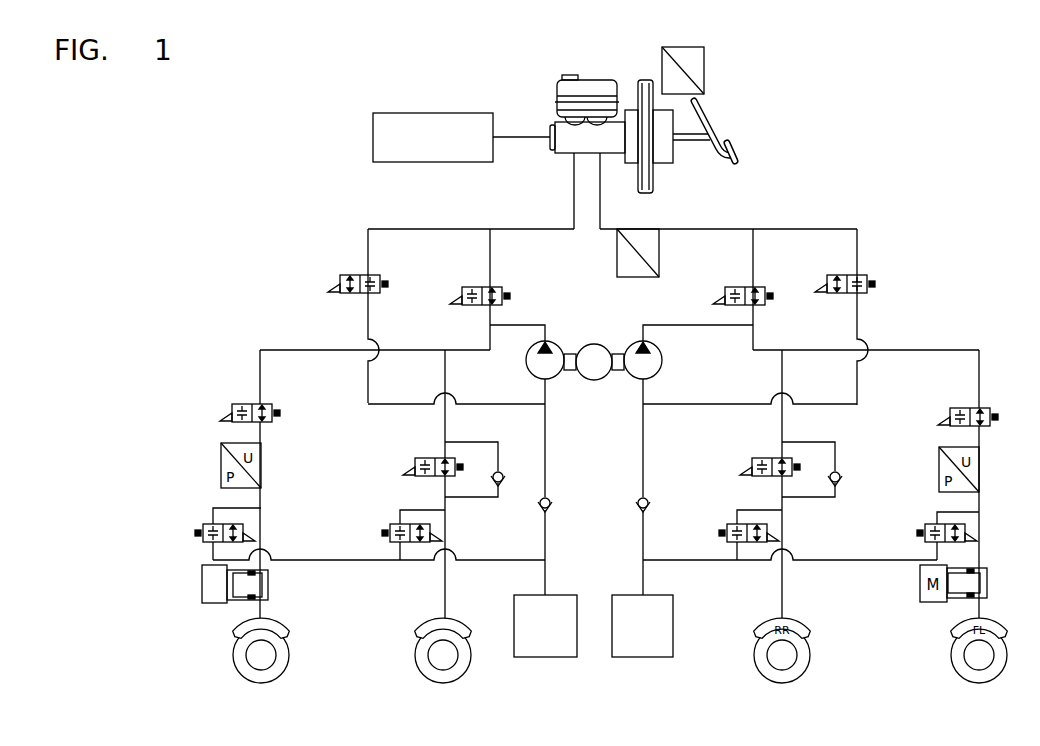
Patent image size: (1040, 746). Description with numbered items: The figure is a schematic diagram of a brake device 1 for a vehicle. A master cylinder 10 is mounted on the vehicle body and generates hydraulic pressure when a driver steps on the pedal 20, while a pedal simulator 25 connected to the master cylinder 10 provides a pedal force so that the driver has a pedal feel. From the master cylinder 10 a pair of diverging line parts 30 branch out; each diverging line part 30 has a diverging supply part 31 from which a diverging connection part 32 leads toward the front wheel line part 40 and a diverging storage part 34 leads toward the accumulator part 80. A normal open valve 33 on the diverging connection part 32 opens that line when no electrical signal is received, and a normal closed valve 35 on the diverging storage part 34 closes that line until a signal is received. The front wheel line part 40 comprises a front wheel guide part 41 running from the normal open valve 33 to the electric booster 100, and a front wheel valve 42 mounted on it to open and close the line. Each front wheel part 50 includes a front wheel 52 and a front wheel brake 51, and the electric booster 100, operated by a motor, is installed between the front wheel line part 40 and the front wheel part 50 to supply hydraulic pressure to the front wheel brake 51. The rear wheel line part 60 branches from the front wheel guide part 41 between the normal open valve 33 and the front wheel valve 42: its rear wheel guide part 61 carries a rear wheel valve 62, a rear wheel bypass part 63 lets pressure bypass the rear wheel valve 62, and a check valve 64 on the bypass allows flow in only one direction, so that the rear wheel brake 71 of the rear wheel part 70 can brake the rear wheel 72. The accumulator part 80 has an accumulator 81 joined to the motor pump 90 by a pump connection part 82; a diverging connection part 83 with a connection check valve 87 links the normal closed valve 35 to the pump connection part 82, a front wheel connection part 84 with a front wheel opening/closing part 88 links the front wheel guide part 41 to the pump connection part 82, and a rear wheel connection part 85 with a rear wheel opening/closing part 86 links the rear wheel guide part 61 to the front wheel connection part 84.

The brake device 1 is at (1000, 55).
The master cylinder 10 is at (594, 79).
The pedal 20 is at (713, 132).
The pedal simulator 25 is at (432, 113).
The diverging line part 30 is at (223, 165).
The diverging supply part 31 is at (538, 229).
The diverging connection part 32 is at (490, 230).
The normal open valve 33 is at (462, 300).
The diverging storage part 34 is at (368, 252).
The normal closed valve 35 is at (340, 281).
The front wheel line part 40 is at (165, 375).
The front wheel guide part 41 is at (260, 382).
The front wheel valve 42 is at (221, 412).
The front wheel part 50 is at (272, 645).
The front wheel brake 51 is at (297, 651).
The front wheel 52 is at (235, 653).
The rear wheel line part 60 is at (952, 245).
The rear wheel guide part 61 is at (785, 367).
The rear wheel valve 62 is at (799, 462).
The rear wheel bypass part 63 is at (837, 452).
The check valve 64 is at (840, 475).
The rear wheel part 70 is at (453, 646).
The rear wheel brake 71 is at (455, 618).
The rear wheel 72 is at (417, 653).
The accumulator part 80 is at (557, 593).
The accumulator 81 is at (673, 617).
The pump connection part 82 is at (643, 463).
The diverging connection part 83 is at (683, 404).
The front wheel connection part 84 is at (873, 562).
The rear wheel connection part 85 is at (727, 542).
The rear wheel opening/closing part 86 is at (774, 538).
The connection check valve 87 is at (647, 500).
The front wheel opening/closing part 88 is at (978, 538).
The motor pump 90 is at (594, 342).
The electric booster 100 is at (197, 566).